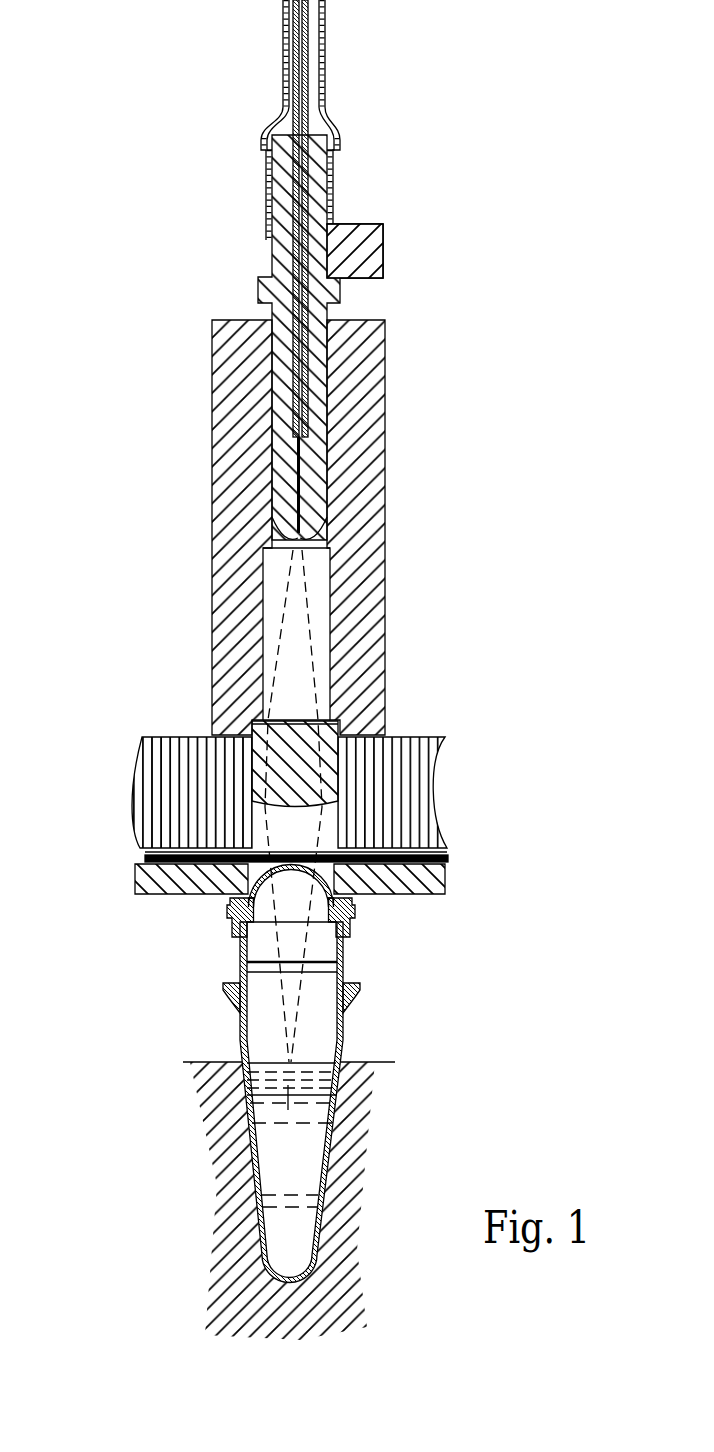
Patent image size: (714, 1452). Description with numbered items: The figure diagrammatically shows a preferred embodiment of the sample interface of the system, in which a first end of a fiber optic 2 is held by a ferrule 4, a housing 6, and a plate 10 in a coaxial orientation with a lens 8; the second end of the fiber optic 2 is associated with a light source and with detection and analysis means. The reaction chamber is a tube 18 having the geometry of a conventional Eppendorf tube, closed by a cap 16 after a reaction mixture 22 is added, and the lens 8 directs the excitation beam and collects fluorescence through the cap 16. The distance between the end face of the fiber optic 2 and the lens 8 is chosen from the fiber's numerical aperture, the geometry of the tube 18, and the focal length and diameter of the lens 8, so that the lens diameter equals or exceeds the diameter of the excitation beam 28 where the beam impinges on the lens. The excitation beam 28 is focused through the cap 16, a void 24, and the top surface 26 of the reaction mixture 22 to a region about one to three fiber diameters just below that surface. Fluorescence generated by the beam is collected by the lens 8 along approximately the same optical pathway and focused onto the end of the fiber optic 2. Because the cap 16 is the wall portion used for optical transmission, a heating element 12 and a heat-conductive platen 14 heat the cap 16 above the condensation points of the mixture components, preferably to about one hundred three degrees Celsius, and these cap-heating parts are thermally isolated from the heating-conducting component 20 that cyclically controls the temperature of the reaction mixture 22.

The fiber optic 2 is at (310, 97).
The ferrule 4 is at (258, 290).
The housing 6 is at (385, 365).
The lens 8 is at (337, 762).
The plate 10 is at (433, 787).
The heating element 12 is at (447, 862).
The heat-conductive platen 14 is at (443, 882).
The cap 16 is at (227, 910).
The tube 18 is at (343, 1037).
The heating-conducting component 20 is at (418, 1199).
The reaction mixture 22 is at (302, 1179).
The void 24 is at (277, 1031).
The top surface 26 is at (290, 1063).
The excitation beam 28 is at (307, 652).